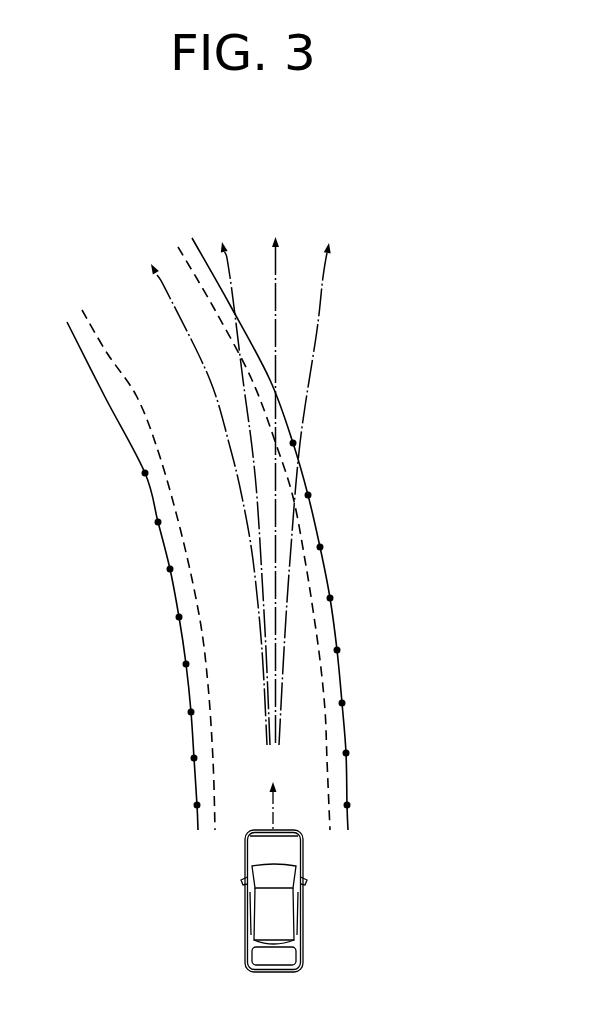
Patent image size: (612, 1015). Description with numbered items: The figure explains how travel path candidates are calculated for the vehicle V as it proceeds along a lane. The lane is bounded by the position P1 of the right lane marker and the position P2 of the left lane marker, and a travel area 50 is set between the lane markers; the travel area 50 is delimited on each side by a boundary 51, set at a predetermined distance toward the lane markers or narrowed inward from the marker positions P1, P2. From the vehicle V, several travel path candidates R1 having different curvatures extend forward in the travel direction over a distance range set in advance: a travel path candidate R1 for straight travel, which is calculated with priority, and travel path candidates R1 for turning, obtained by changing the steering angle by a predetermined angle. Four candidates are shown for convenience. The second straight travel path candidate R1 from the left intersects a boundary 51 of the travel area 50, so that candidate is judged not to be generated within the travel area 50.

The travel area 50 is at (189, 406).
The boundary 51 is at (208, 685).
The travel path candidate R1 is at (170, 298).
The position of right lane marker P1 is at (351, 803).
The position of left lane marker P2 is at (195, 805).
The vehicle V is at (303, 903).